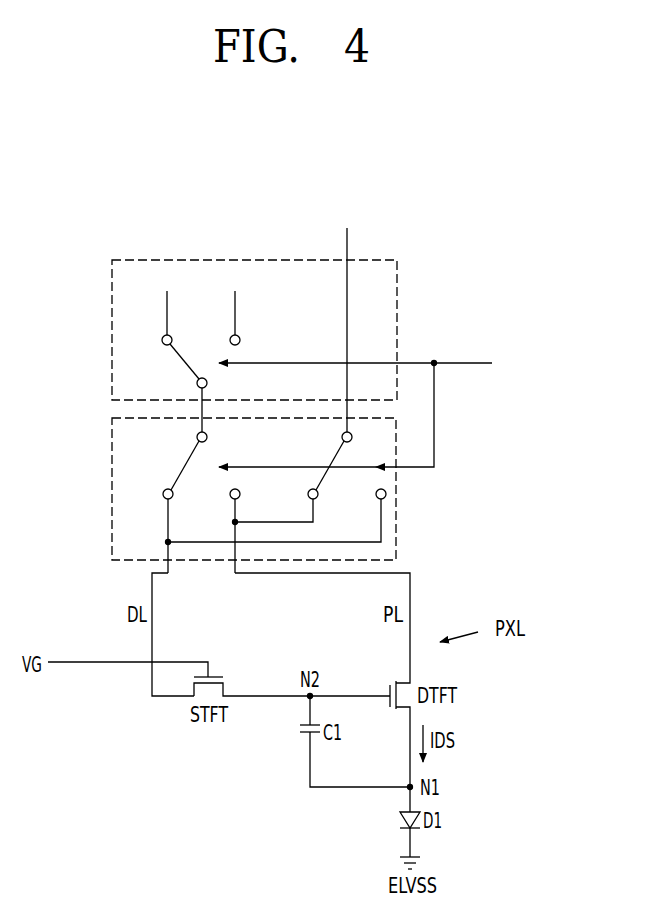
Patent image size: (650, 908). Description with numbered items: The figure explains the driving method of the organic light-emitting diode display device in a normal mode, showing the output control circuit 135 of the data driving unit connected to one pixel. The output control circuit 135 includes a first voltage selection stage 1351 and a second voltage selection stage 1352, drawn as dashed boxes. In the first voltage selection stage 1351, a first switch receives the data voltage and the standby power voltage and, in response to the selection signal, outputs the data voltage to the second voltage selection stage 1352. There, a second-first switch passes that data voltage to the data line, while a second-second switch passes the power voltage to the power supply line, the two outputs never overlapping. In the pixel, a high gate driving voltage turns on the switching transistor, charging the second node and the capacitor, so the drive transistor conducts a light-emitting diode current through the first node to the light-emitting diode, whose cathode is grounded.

The output control circuit 135 is at (440, 305).
The first voltage selection stage 1351 is at (112, 332).
The second voltage selection stage 1352 is at (112, 490).